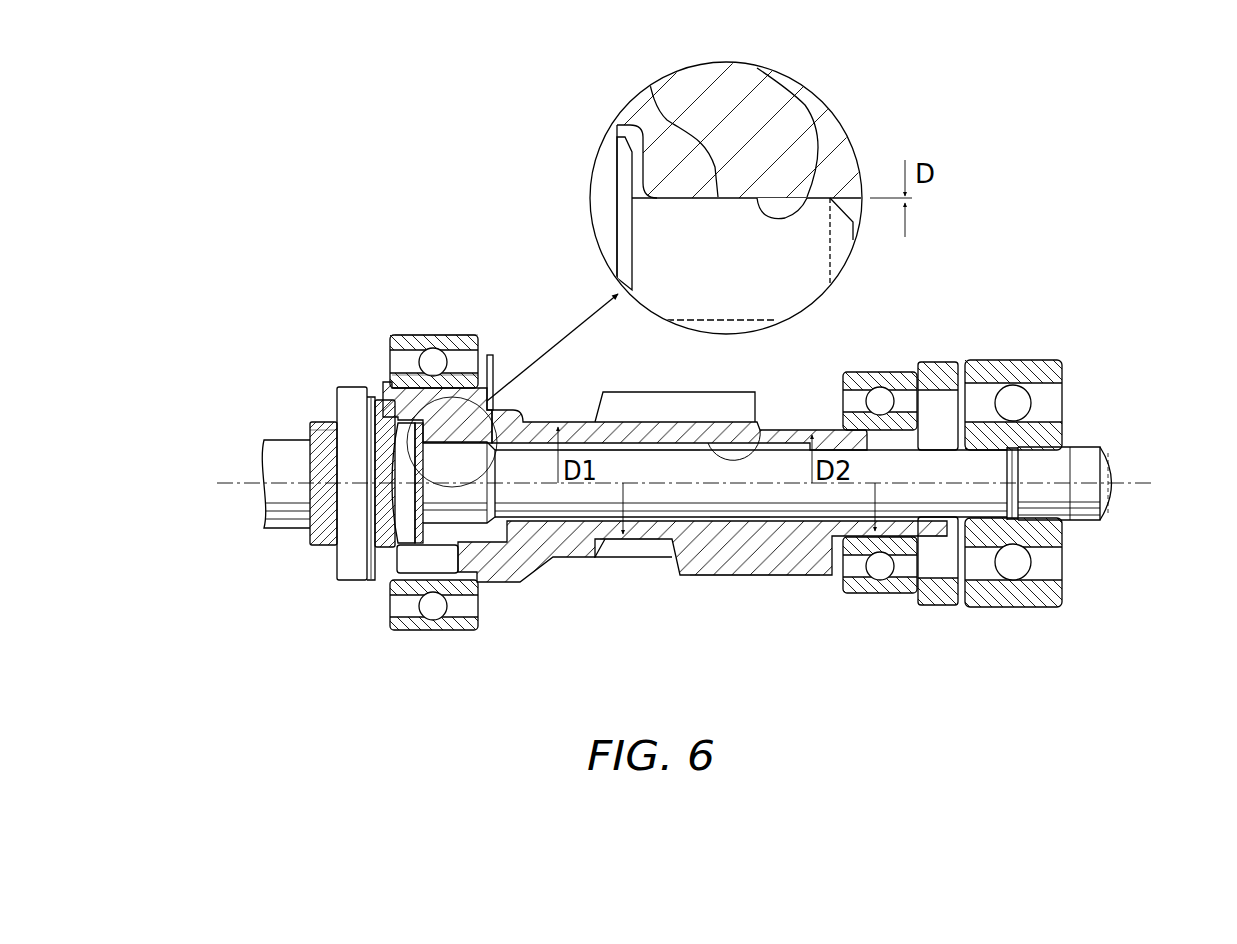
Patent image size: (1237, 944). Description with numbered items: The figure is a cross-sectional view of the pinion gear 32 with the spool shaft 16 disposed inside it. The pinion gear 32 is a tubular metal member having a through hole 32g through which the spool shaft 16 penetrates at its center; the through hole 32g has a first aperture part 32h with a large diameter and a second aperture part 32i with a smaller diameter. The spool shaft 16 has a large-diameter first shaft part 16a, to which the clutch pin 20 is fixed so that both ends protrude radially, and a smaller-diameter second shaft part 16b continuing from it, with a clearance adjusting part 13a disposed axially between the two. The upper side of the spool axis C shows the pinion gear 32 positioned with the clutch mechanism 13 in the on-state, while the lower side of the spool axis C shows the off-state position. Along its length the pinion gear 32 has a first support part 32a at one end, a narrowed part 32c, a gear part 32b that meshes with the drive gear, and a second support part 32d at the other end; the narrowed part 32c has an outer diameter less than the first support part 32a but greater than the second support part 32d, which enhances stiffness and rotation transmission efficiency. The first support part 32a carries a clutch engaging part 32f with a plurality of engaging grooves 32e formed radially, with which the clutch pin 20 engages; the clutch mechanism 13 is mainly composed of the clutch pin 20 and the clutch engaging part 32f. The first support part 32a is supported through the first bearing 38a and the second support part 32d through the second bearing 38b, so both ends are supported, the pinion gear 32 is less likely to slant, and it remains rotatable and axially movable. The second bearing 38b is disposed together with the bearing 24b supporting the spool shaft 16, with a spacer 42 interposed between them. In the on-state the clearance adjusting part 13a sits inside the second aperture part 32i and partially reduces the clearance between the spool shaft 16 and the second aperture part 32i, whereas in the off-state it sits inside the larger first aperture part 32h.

The clutch mechanism 13 is at (316, 390).
The clearance adjusting part 13a is at (462, 522).
The spool shaft 16 is at (1099, 436).
The first shaft part 16a is at (318, 548).
The second shaft part 16b is at (630, 467).
The clutch pin 20 is at (343, 407).
The bearing 24b is at (1020, 608).
The pinion gear 32 is at (557, 588).
The first support part 32a is at (437, 383).
The gear part 32b is at (788, 578).
The narrowed part 32c is at (637, 541).
The second support part 32d is at (950, 606).
The engaging grooves 32e is at (354, 385).
The clutch engaging part 32f is at (403, 574).
The through hole 32g is at (717, 508).
The first aperture part 32h is at (404, 337).
The second aperture part 32i is at (764, 430).
The first bearing 38a is at (430, 632).
The second bearing 38b is at (890, 595).
The spacer 42 is at (936, 362).
The spool axis C is at (233, 480).